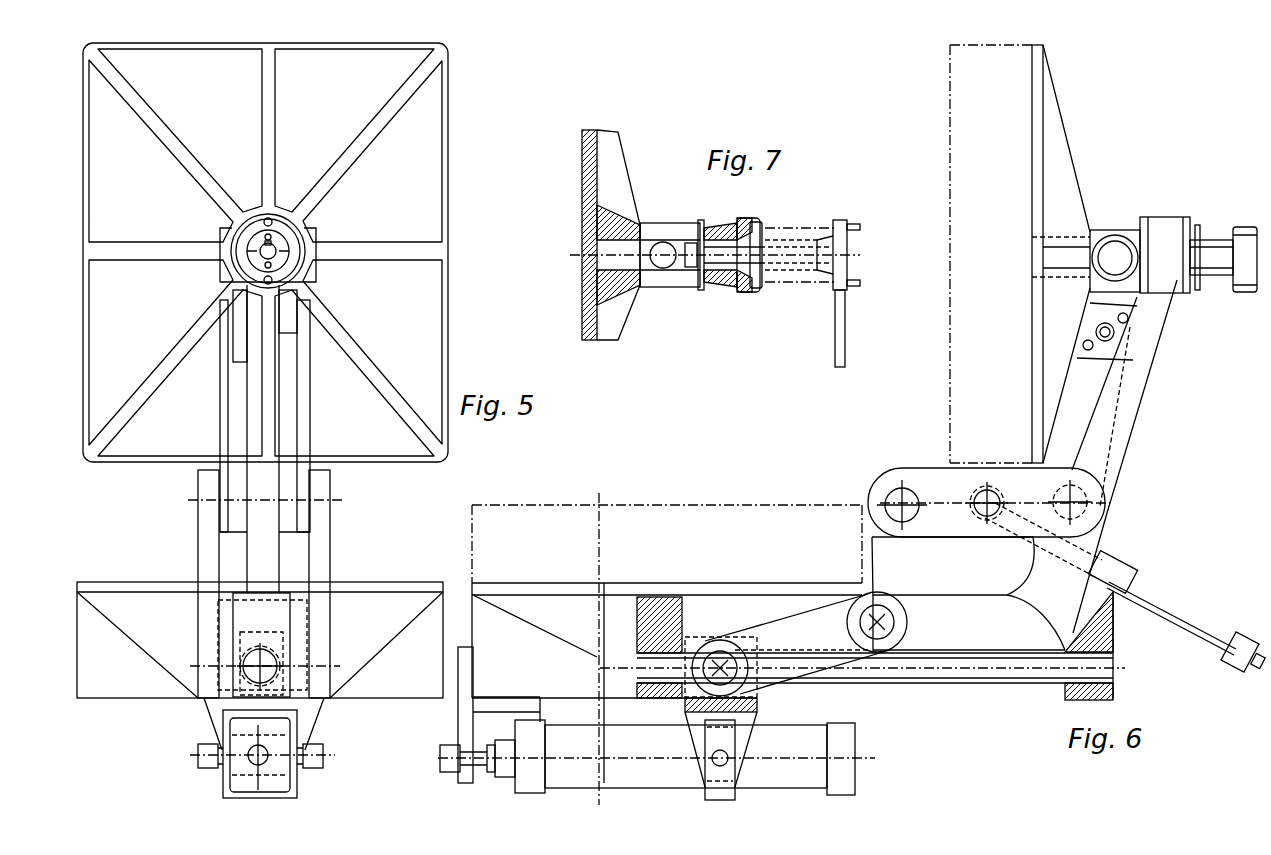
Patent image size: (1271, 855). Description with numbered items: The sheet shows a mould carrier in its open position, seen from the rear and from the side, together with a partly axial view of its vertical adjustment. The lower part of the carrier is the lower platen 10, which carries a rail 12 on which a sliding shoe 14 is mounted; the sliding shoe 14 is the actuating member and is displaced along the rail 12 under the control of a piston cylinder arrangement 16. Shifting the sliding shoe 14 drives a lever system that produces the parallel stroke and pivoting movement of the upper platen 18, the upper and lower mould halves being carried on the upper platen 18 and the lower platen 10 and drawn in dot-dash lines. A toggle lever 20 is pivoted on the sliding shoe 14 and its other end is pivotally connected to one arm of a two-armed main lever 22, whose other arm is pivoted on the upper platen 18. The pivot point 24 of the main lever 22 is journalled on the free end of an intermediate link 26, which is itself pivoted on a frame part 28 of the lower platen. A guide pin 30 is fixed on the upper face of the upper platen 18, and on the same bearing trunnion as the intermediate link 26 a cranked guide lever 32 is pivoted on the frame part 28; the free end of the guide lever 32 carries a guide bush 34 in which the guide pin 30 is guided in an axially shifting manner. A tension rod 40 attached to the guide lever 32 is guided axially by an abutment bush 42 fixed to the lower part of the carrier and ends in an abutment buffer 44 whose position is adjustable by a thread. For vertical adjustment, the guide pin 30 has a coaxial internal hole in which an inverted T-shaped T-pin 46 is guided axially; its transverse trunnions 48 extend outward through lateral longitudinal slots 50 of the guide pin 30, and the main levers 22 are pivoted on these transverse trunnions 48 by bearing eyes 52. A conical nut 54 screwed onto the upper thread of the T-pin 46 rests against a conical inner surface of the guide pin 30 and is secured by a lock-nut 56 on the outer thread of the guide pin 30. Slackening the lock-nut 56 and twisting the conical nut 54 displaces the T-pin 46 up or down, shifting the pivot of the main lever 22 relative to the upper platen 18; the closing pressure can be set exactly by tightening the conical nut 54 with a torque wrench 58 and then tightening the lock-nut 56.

In FIG. 5, the lower platen 10 is at (147, 588).
In FIG. 6, the lower platen 10 is at (710, 593).
In FIG. 5, the rail 12 is at (258, 666).
In FIG. 6, the rail 12 is at (978, 670).
In FIG. 6, the sliding shoe 14 is at (760, 700).
In FIG. 5, the piston cylinder arrangement 16 is at (285, 760).
In FIG. 6, the piston cylinder arrangement 16 is at (792, 770).
In FIG. 5, the upper platen 18 is at (432, 344).
In FIG. 7, the upper platen 18 is at (582, 160).
In FIG. 6, the upper platen 18 is at (1038, 123).
In FIG. 6, the toggle lever 20 is at (820, 633).
In FIG. 5, the main lever 22 is at (265, 408).
In FIG. 6, the main lever 22 is at (1045, 625).
In FIG. 6, the pivot point 24 is at (1005, 505).
In FIG. 5, the intermediate link 26 is at (290, 505).
In FIG. 6, the intermediate link 26 is at (1100, 480).
In FIG. 5, the frame part 28 is at (322, 568).
In FIG. 6, the frame part 28 is at (867, 557).
In FIG. 7, the guide pin 30 is at (697, 272).
In FIG. 6, the guide pin 30 is at (1212, 272).
In FIG. 5, the guide lever 32 is at (300, 410).
In FIG. 6, the guide lever 32 is at (1146, 365).
In FIG. 6, the guide bush 34 is at (1160, 296).
In FIG. 6, the tension rod 40 is at (1160, 607).
In FIG. 6, the abutment bush 42 is at (1118, 562).
In FIG. 6, the abutment buffer 44 is at (1233, 666).
In FIG. 5, the T-pin 46 is at (283, 250).
In FIG. 7, the T-pin 46 is at (724, 265).
In FIG. 6, the T-pin 46 is at (1115, 261).
In FIG. 7, the transverse trunnions 48 is at (658, 244).
In FIG. 7, the longitudinal slots 50 is at (675, 270).
In FIG. 5, the bearing eyes 52 is at (222, 235).
In FIG. 5, the conical nut 54 is at (263, 237).
In FIG. 7, the conical nut 54 is at (743, 295).
In FIG. 5, the lock-nut 56 is at (283, 222).
In FIG. 7, the lock-nut 56 is at (754, 294).
In FIG. 6, the lock-nut 56 is at (1245, 237).
In FIG. 7, the torque wrench 58 is at (843, 262).